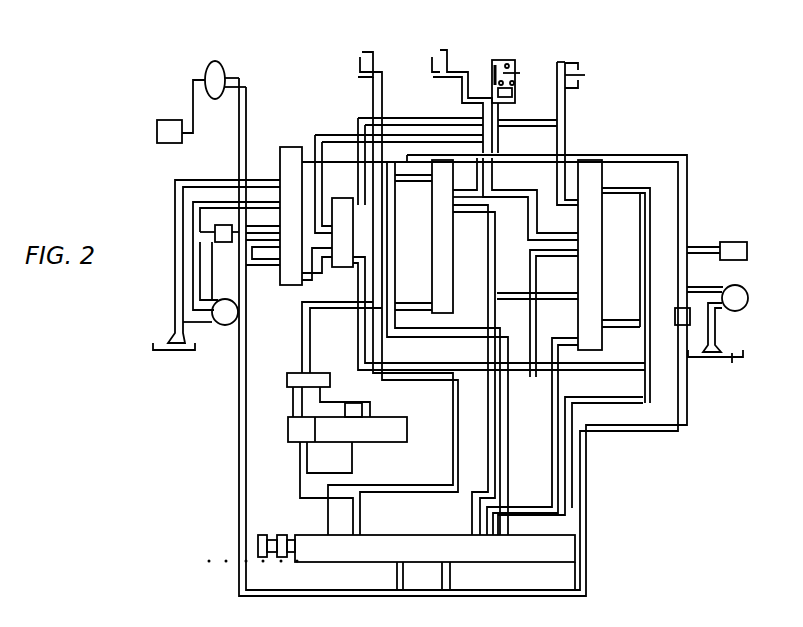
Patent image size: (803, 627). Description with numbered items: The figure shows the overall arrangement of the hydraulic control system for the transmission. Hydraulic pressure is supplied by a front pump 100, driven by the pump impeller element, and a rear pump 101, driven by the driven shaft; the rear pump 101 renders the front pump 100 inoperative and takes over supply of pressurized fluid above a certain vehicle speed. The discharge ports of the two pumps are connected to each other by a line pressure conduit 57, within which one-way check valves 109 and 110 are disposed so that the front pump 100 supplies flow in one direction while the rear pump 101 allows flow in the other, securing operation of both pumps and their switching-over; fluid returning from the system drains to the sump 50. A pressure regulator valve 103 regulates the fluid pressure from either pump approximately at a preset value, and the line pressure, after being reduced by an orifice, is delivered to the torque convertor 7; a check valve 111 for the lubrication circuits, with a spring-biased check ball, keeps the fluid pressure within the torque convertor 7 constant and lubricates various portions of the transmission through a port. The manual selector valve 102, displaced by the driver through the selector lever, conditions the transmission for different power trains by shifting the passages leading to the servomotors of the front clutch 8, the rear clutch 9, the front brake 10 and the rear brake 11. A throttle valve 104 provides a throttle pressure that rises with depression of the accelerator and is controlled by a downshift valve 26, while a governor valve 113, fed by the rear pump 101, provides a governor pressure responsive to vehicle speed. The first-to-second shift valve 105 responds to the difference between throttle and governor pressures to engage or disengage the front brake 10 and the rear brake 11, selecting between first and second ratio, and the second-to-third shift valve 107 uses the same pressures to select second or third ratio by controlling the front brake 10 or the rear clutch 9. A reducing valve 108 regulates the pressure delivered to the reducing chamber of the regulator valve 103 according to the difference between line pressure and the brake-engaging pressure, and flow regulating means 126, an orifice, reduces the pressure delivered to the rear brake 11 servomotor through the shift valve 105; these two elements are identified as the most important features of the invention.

The torque convertor 7 is at (222, 73).
The front clutch 8 is at (358, 48).
The rear clutch 9 is at (431, 50).
The front brake 10 is at (501, 58).
The rear brake 11 is at (570, 60).
The downshift valve 26 is at (288, 432).
The sump drain 50 is at (158, 350).
The line pressure conduit 57 is at (586, 566).
The front pump 100 is at (223, 326).
The rear pump 101 is at (742, 292).
The manual selector valve 102 is at (301, 534).
The pressure regulator valve 103 is at (290, 147).
The throttle valve 104 is at (348, 454).
The 1-2 shift valve 105 is at (598, 217).
The 2-3 shift valve 107 is at (437, 220).
The reducing valve 108 is at (340, 210).
The one-way check valve 109 is at (221, 242).
The one-way check valve 110 is at (678, 326).
The check valve 111 is at (161, 120).
The governor valve 113 is at (734, 242).
The flow regulating means 126 is at (620, 186).